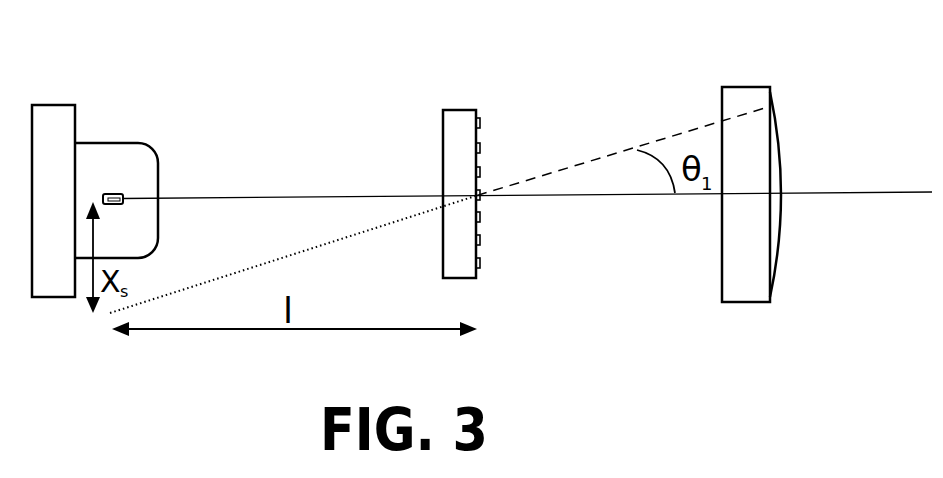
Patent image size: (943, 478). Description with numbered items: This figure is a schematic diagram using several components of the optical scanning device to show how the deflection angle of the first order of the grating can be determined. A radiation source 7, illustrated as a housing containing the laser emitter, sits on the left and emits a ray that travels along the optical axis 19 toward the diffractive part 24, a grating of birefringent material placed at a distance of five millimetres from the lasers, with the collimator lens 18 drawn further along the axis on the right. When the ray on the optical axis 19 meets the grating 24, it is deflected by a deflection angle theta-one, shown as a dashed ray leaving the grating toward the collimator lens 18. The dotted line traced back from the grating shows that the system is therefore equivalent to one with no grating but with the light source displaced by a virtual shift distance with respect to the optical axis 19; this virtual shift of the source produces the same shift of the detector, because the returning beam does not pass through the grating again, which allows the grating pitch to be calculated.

The radiation source 7 is at (50, 118).
The diffractive part 24 is at (457, 130).
The collimator lens 18 is at (738, 117).
The optical axis 19 is at (842, 202).